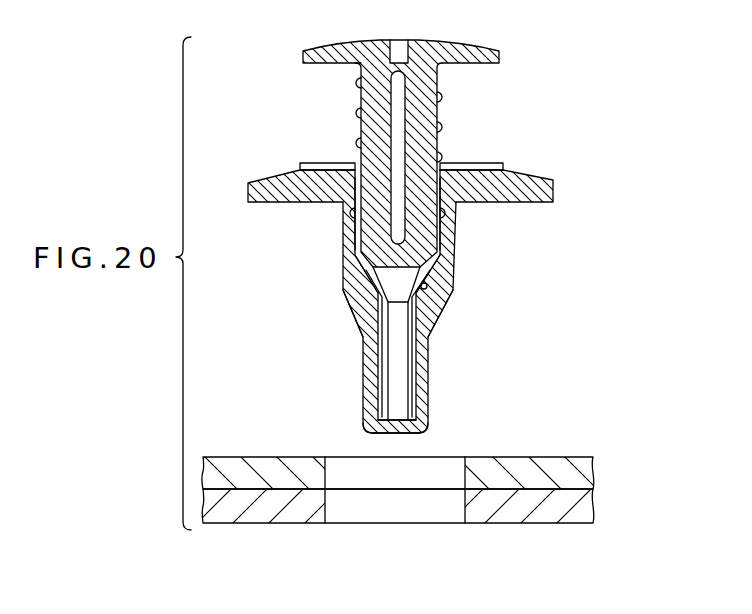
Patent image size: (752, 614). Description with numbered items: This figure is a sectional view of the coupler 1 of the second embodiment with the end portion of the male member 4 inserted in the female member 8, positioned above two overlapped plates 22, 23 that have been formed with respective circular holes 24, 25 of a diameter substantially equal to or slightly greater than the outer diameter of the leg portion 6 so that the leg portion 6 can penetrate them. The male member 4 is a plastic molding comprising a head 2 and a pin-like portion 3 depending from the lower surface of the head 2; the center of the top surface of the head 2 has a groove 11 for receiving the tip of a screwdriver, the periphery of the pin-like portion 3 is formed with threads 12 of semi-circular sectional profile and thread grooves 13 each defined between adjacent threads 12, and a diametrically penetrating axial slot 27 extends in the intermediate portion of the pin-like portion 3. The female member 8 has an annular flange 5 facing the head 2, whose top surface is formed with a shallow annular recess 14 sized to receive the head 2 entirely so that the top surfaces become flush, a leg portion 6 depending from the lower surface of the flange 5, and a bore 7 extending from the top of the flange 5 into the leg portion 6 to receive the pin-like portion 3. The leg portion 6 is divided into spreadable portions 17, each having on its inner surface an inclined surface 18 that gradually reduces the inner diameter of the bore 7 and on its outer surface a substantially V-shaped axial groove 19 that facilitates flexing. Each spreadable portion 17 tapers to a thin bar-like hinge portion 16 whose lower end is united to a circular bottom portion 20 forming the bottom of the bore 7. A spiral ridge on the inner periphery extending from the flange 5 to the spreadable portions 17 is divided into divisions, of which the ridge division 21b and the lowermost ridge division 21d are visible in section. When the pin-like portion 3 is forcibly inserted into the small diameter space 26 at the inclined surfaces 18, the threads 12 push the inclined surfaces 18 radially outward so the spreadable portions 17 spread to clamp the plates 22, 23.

The coupler 1 is at (583, 88).
The head 2 is at (500, 57).
The pin-like portion 3 is at (437, 104).
The male member 4 is at (542, 52).
The flange 5 is at (531, 203).
The leg portion 6 is at (515, 230).
The bore 7 is at (438, 237).
The female member 8 is at (552, 217).
The groove 11 is at (419, 44).
The threads 12 is at (359, 86).
The thread grooves 13 is at (359, 142).
The annular recess 14 is at (313, 163).
The hinge portions 16 is at (364, 379).
The spreadable portions 17 is at (352, 272).
The inclined surface 18 is at (420, 297).
The axial groove 19 is at (430, 288).
The bottom portion 20 is at (400, 432).
The ridge division 21b is at (440, 227).
The lowermost ridge division 21d is at (356, 216).
The plate 22 is at (586, 475).
The plate 23 is at (587, 514).
The circular hole 24 is at (342, 468).
The circular hole 25 is at (367, 512).
The small diameter space 26 is at (400, 360).
The axial slot 27 is at (398, 148).